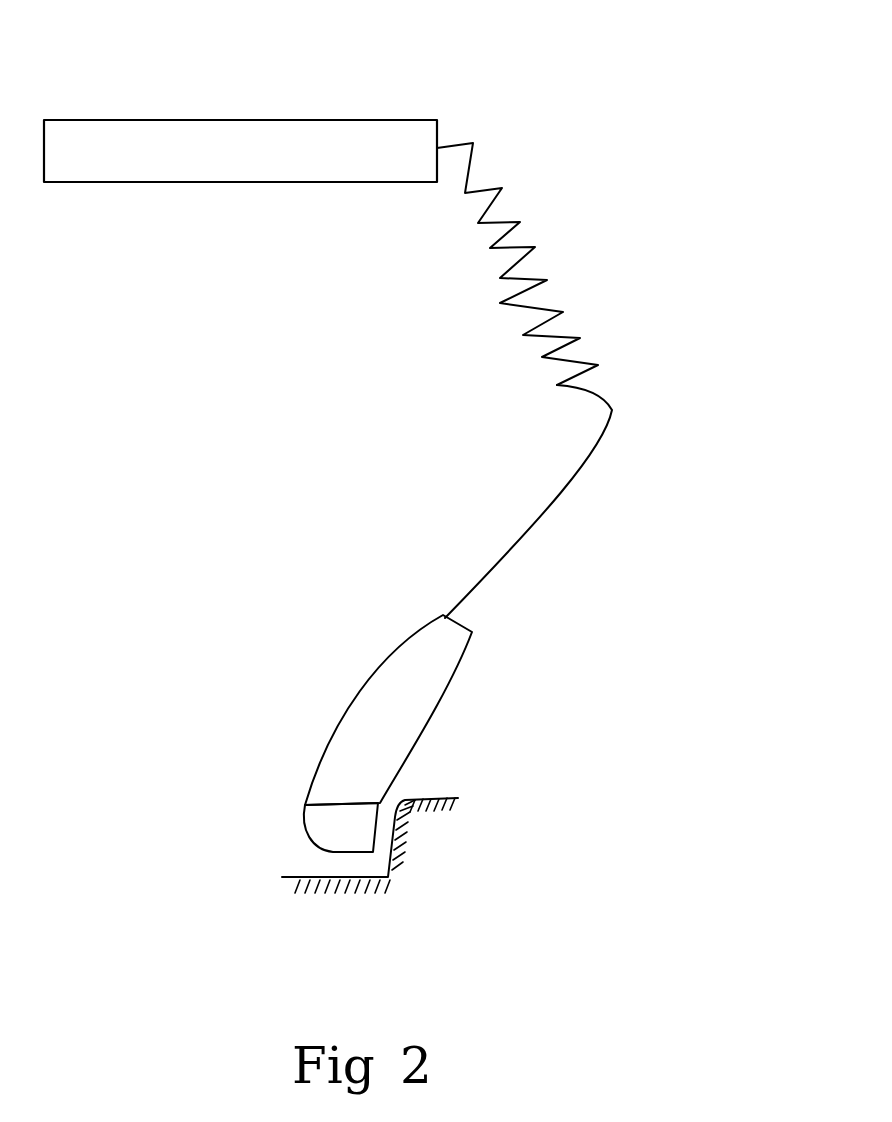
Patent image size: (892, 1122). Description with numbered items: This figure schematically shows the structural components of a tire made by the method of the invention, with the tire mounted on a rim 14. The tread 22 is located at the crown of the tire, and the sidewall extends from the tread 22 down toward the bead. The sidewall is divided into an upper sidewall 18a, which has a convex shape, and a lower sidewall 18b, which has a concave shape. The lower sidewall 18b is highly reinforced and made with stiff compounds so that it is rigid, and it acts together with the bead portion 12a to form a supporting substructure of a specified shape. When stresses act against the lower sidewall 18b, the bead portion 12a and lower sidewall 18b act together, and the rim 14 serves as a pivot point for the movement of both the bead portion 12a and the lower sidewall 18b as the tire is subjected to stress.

The tread 22 is at (338, 118).
The upper sidewall 18a is at (522, 223).
The lower sidewall 18b is at (438, 698).
The bead portion 12a is at (327, 825).
The rim 14 is at (415, 832).